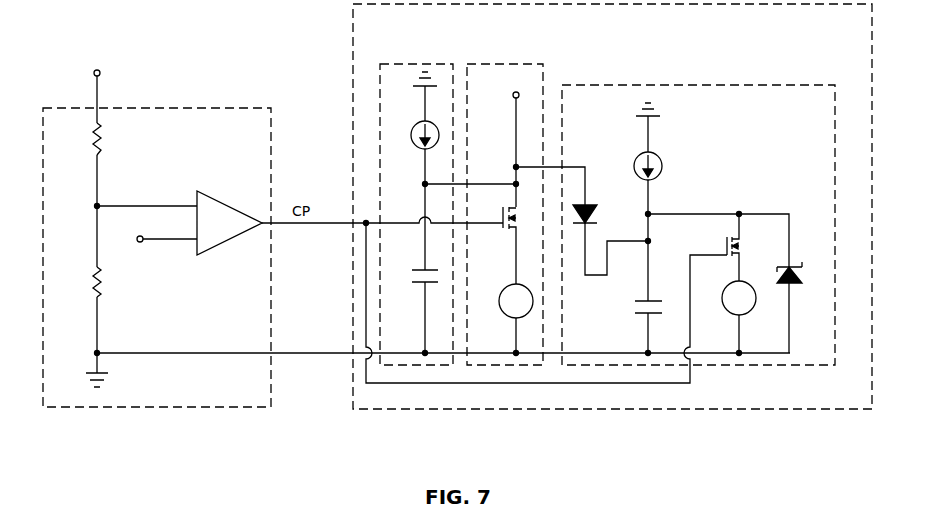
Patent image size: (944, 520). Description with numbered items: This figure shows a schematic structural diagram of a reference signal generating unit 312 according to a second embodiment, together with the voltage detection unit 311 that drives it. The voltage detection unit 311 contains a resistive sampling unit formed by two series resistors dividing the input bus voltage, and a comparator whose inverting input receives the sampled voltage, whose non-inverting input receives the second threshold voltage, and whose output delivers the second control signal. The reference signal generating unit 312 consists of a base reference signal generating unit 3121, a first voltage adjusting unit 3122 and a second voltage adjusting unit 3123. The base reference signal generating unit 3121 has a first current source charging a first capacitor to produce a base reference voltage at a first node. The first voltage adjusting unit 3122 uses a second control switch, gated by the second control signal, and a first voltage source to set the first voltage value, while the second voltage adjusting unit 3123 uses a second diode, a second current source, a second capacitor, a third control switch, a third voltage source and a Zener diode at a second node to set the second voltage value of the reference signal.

The voltage detection unit 311 is at (163, 407).
The reference signal generating unit 312 is at (667, 400).
The base reference signal generating unit 3121 is at (395, 64).
The first voltage adjusting unit 3122 is at (485, 64).
The second voltage adjusting unit 3123 is at (677, 97).